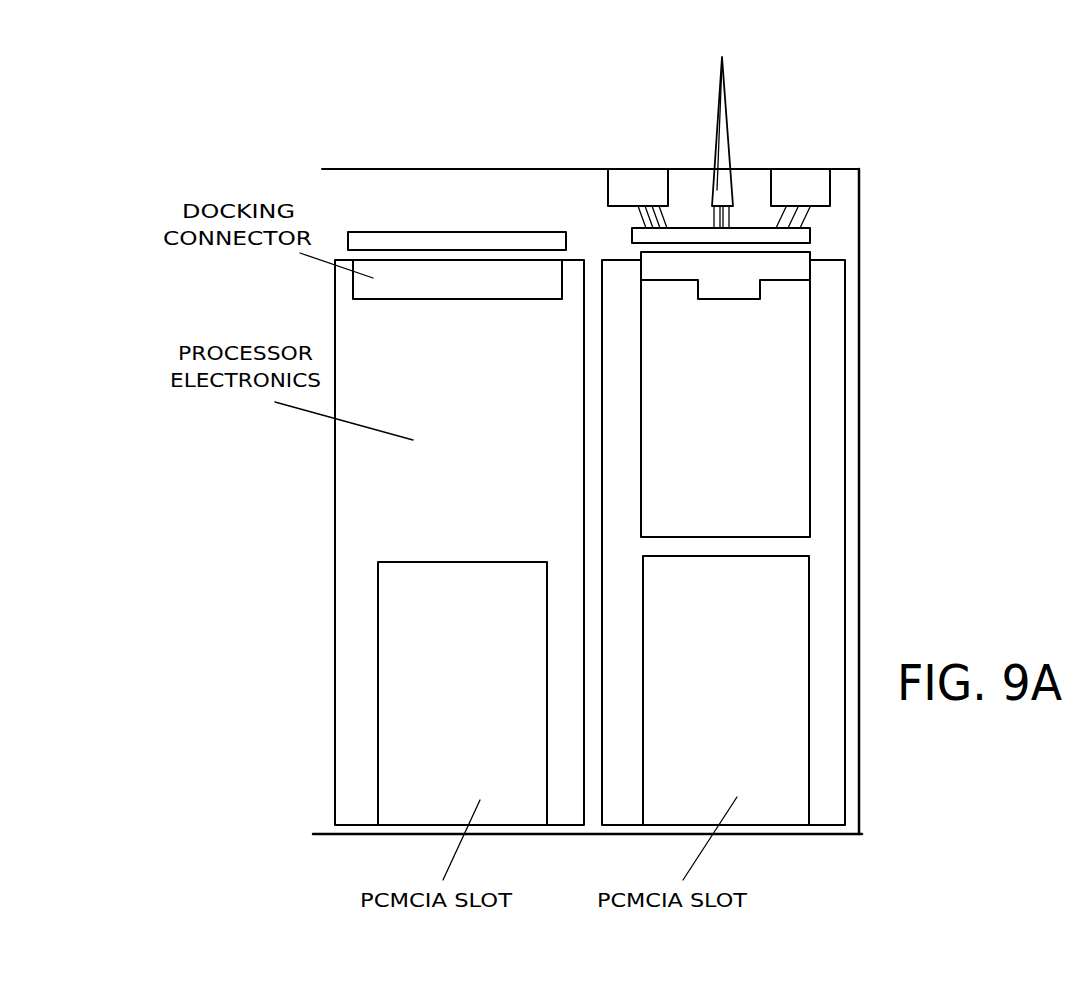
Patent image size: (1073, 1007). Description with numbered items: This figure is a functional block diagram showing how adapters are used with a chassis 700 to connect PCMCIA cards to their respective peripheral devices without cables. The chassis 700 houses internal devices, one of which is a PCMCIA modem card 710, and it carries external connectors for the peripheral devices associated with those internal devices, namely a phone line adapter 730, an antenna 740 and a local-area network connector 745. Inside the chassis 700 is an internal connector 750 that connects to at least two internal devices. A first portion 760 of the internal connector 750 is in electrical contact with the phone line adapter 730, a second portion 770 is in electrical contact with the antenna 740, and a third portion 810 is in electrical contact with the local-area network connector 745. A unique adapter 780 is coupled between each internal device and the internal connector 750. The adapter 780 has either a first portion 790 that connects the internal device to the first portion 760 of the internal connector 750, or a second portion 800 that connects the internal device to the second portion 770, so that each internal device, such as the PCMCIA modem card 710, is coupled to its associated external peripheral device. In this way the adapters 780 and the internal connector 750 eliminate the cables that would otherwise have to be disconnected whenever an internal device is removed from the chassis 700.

The chassis 700 is at (403, 185).
The PCMCIA modem card 710 is at (788, 425).
The phone line adapter 730 is at (637, 177).
The antenna 740 is at (727, 103).
The local-area network connector 745 is at (810, 185).
The internal connector 750 is at (810, 232).
The first portion of the internal connector 760 is at (632, 228).
The second portion of the internal connector 770 is at (740, 235).
The adapter 780 is at (796, 269).
The first portion of the adapter 790 is at (641, 253).
The second portion of the adapter 800 is at (715, 253).
The third portion of the internal connector 810 is at (788, 238).